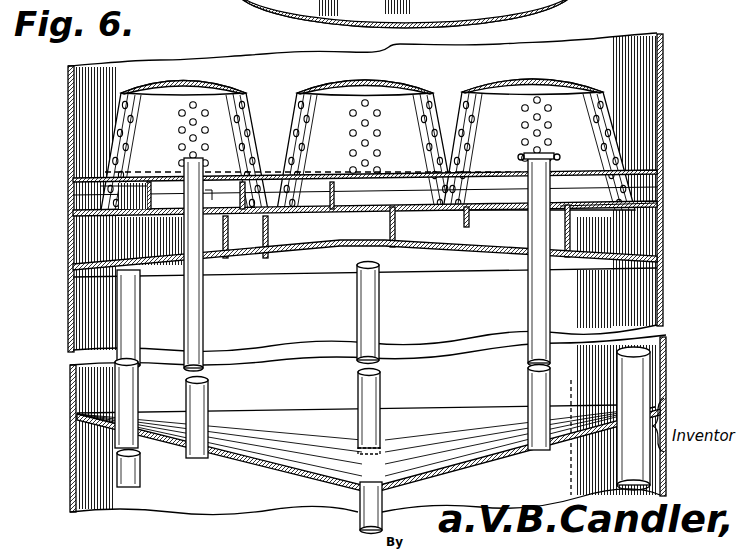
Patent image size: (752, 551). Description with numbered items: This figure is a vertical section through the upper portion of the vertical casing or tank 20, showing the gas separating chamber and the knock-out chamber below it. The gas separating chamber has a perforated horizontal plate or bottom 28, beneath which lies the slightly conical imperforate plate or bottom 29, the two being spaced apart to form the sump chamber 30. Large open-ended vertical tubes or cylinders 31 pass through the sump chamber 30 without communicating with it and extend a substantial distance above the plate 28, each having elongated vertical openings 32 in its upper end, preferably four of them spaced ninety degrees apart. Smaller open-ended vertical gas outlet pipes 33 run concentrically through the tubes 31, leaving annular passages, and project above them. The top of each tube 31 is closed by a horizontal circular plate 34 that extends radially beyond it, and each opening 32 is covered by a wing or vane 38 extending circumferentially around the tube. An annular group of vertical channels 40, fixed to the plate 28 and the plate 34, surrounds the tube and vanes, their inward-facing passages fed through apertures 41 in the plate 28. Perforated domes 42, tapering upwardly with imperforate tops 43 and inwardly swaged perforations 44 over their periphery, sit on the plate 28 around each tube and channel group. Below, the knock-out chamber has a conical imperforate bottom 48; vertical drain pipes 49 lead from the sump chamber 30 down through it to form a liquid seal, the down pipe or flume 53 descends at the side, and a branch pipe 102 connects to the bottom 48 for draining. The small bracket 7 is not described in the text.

The bracket 7 is at (262, 197).
The vertical casing or tank 20 is at (72, 402).
The horizontal plate or bottom 28 is at (620, 212).
The imperforate plate or bottom 29 is at (620, 270).
The sump chamber 30 is at (653, 242).
The vertical tube or cylinder 31 is at (232, 243).
The elongated vertical opening 32 is at (147, 216).
The vertical gas outlet pipe 33 is at (205, 323).
The horizontal circular plate 34 is at (583, 163).
The wing or vane 38 is at (150, 181).
The vertical channel 40 is at (150, 196).
The aperture 41 is at (120, 219).
The dome 42 is at (57, 146).
The imperforate top 43 is at (316, 91).
The perforation 44 is at (118, 121).
The imperforate bottom 48 is at (487, 458).
The vertical drain pipe 49 is at (120, 318).
The vertical down pipe or flume 53 is at (640, 397).
The branch pipe 102 is at (382, 492).